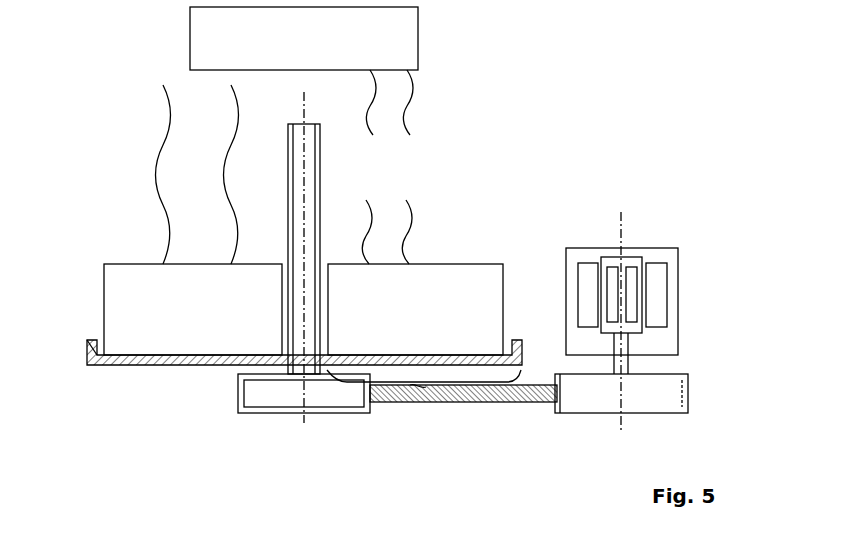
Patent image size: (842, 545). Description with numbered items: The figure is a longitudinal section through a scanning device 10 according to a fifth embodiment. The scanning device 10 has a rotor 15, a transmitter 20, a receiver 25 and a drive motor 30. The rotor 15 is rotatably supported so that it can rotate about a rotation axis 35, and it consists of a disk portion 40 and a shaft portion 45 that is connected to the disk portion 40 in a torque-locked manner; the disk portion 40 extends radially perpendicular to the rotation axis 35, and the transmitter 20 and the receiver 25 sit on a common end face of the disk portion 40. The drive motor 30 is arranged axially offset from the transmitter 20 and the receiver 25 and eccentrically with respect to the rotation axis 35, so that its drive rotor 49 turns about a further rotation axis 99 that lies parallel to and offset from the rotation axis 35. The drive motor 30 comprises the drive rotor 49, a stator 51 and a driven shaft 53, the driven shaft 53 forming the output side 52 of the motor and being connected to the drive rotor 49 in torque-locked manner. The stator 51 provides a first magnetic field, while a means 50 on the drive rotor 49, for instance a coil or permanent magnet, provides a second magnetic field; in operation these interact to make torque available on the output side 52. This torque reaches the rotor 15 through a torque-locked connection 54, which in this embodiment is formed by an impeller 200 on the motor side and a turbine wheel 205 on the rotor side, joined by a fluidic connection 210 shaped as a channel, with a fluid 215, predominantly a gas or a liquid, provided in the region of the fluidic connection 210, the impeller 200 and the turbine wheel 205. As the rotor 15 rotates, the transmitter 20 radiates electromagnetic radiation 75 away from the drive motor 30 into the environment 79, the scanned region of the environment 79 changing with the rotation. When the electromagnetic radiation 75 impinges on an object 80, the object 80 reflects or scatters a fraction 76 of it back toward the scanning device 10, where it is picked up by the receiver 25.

The scanning device 10 is at (492, 116).
The rotor 15 is at (158, 365).
The transmitter 20 is at (199, 279).
The receiver 25 is at (464, 279).
The drive motor 30 is at (678, 275).
The rotation axis 35 is at (301, 113).
The disk portion 40 is at (419, 402).
The shaft portion 45 is at (321, 172).
The drive rotor 49 is at (602, 258).
The means for making a second magnetic field available 50 is at (607, 262).
The stator 51 is at (583, 290).
The output side 52 is at (600, 355).
The driven shaft 53 is at (628, 365).
The torque-locked connection 54 is at (388, 418).
The electromagnetic radiation 75 is at (231, 105).
The fraction of the electromagnetic radiation 76 is at (408, 208).
The environment 79 is at (461, 152).
The object 80 is at (190, 35).
The further rotation axis 99 is at (625, 235).
The impeller 200 is at (660, 405).
The turbine wheel 205 is at (257, 414).
The fluidic connection 210 is at (488, 402).
The fluid 215 is at (531, 402).